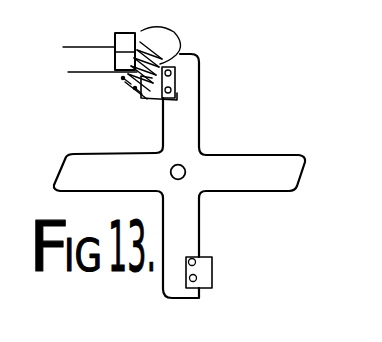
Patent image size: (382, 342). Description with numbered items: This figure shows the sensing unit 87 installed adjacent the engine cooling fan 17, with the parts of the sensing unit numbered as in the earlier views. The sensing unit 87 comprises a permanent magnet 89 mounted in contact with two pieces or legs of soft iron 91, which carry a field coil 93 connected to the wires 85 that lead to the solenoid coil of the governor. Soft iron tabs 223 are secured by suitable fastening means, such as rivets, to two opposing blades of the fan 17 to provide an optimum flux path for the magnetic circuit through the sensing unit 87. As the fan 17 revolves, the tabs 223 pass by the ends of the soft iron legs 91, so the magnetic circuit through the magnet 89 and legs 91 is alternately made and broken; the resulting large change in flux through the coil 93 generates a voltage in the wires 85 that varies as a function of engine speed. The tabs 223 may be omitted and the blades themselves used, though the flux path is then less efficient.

The engine fan 17 is at (221, 143).
The wires 85 is at (82, 71).
The sensing unit 87 is at (135, 102).
The permanent magnet 89 is at (107, 46).
The soft iron legs 91 is at (141, 32).
The field coil 93 is at (122, 79).
The soft iron tabs 223 is at (175, 79).